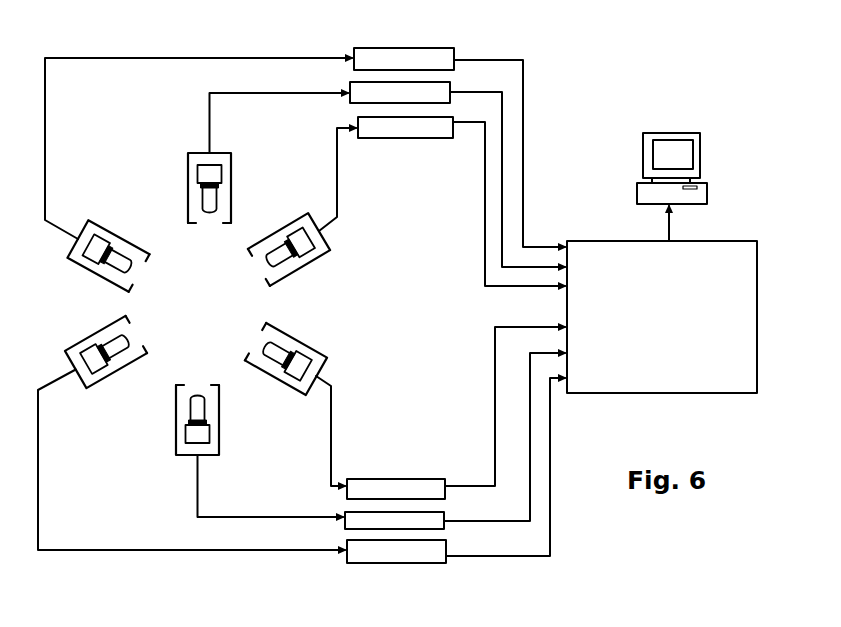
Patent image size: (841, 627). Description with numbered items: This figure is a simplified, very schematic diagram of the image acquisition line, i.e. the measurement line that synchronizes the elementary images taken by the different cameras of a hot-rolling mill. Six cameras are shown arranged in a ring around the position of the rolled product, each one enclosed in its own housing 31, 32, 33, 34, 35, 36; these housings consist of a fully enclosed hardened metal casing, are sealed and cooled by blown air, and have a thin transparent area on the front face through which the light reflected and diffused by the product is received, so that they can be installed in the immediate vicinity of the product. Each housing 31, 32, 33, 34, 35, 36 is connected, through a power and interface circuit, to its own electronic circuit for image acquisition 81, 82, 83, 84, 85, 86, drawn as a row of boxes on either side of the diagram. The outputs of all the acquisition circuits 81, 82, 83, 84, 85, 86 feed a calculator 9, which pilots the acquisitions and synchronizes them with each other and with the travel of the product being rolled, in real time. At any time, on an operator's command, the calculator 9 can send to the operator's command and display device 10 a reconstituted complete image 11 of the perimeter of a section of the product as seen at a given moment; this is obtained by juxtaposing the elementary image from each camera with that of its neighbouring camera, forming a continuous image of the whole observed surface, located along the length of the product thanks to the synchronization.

The calculator 9 is at (683, 378).
The operator's command and display device 10 is at (665, 146).
The complete image 11 is at (672, 158).
The housing 31 is at (188, 165).
The housing 32 is at (318, 251).
The housing 33 is at (305, 392).
The housing 34 is at (177, 447).
The housing 35 is at (72, 353).
The housing 36 is at (78, 253).
The electronic circuit for image acquisition 81 is at (352, 92).
The electronic circuit for image acquisition 82 is at (405, 150).
The electronic circuit for image acquisition 83 is at (410, 487).
The electronic circuit for image acquisition 84 is at (352, 515).
The electronic circuit for image acquisition 85 is at (433, 550).
The electronic circuit for image acquisition 86 is at (420, 56).